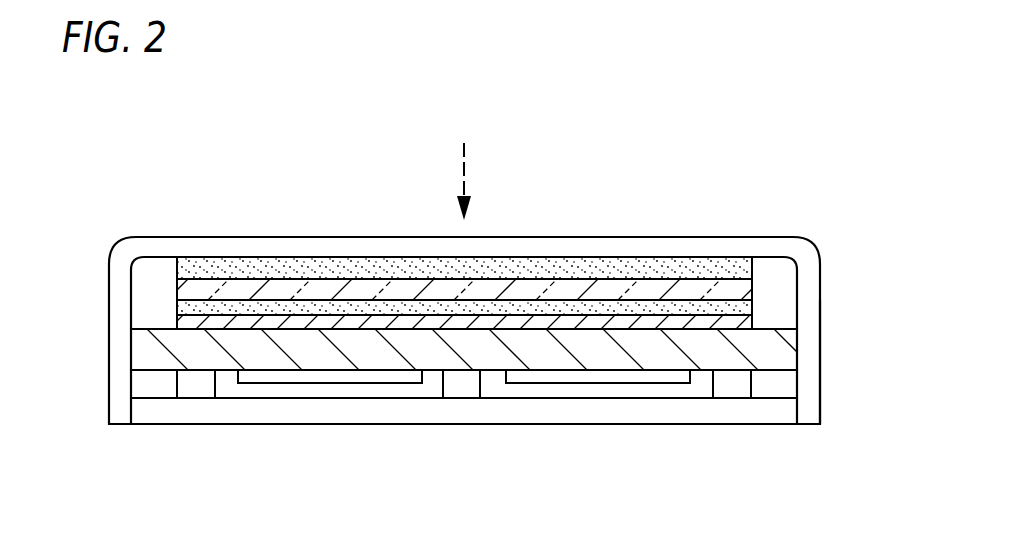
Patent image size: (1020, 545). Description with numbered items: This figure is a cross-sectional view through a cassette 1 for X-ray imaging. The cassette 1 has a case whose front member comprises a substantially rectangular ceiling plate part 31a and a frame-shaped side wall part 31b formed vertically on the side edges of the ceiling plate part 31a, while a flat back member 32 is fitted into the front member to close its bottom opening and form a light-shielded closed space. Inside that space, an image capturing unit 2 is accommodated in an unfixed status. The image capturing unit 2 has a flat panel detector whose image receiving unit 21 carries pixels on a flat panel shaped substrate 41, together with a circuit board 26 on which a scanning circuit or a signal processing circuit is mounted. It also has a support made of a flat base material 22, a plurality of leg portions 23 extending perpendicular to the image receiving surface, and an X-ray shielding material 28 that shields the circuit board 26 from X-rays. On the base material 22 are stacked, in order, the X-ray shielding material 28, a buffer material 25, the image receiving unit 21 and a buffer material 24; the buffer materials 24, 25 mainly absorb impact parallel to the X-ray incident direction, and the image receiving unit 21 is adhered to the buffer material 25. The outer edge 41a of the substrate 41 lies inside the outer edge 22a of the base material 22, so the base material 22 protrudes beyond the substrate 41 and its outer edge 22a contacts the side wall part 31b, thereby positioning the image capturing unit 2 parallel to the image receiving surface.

The cassette 1 is at (798, 172).
The image capturing unit 2 is at (779, 272).
The image receiving unit 21 is at (182, 292).
The base material 22 is at (270, 352).
The outer edge of the base material 22a is at (787, 353).
The leg portions 23 is at (465, 385).
The buffer material 24 is at (176, 268).
The buffer material 25 is at (180, 312).
The circuit board 26 is at (330, 378).
The X-ray shielding material 28 is at (178, 318).
The ceiling plate part 31a is at (525, 248).
The side wall part 31b is at (803, 410).
The back member 32 is at (696, 413).
The substrate 41 is at (640, 290).
The outer edge of the substrate 41a is at (735, 295).